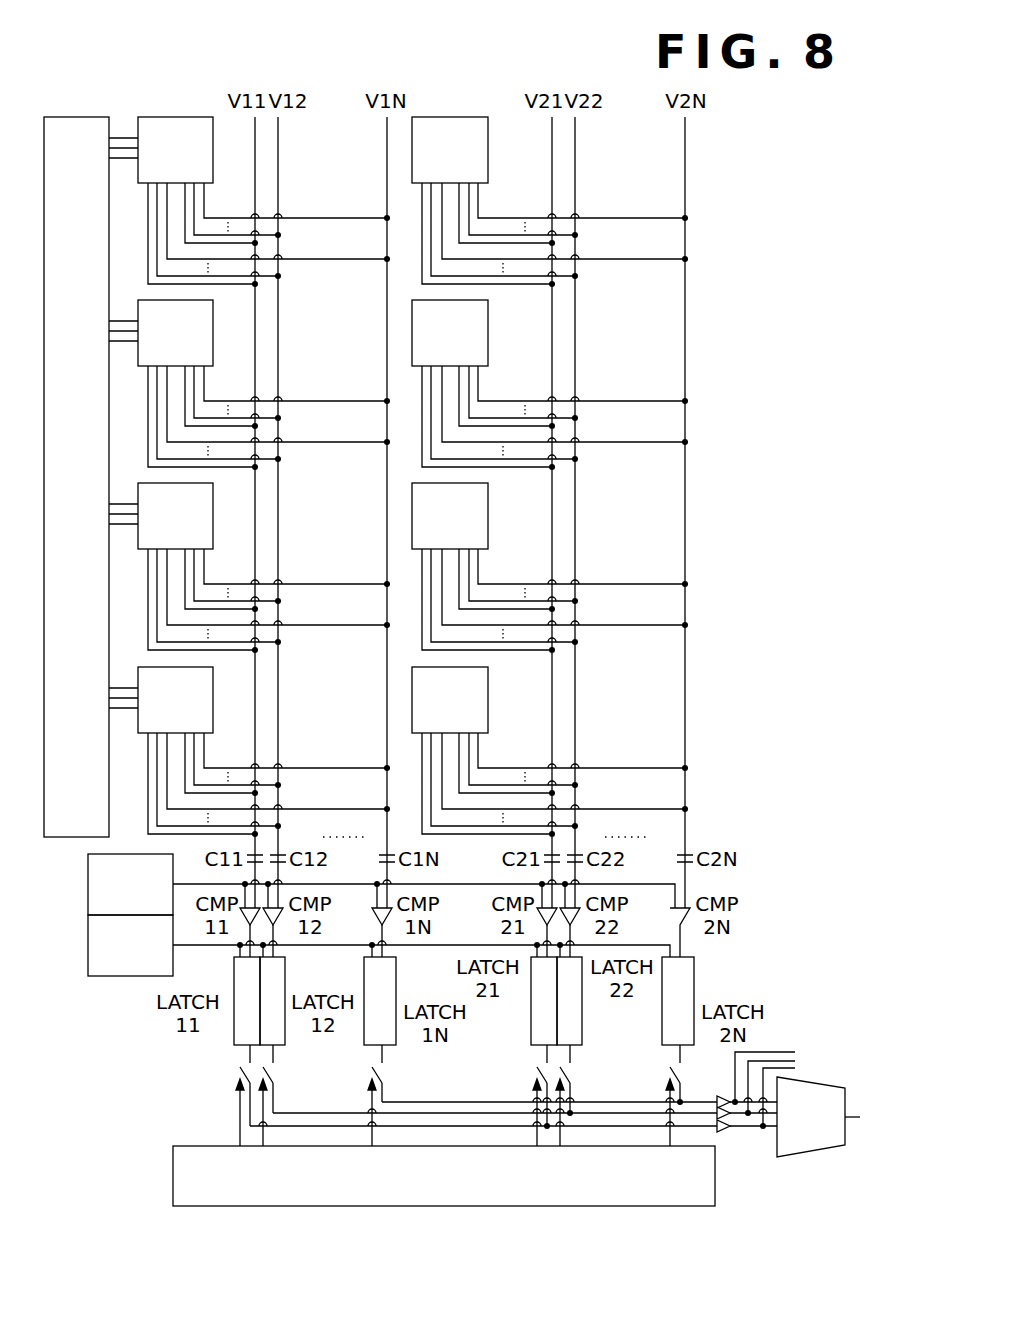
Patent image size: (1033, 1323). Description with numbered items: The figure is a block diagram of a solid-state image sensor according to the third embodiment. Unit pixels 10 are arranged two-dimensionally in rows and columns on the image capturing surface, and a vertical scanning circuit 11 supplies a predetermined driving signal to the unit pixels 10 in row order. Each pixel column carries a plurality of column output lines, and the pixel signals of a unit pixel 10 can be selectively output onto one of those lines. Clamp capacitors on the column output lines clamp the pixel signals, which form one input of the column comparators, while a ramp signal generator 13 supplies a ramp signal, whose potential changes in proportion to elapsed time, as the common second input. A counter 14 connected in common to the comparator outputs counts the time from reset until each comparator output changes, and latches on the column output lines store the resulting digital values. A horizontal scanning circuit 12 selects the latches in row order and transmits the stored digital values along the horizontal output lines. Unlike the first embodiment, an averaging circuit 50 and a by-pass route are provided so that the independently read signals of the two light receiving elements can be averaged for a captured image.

The unit pixel 10 is at (293, 53).
The vertical scanning circuit 11 is at (65, 472).
The horizontal scanning circuit 12 is at (190, 1146).
The ramp signal generator 13 is at (88, 884).
The counter 14 is at (88, 945).
The averaging circuit 50 is at (780, 1207).